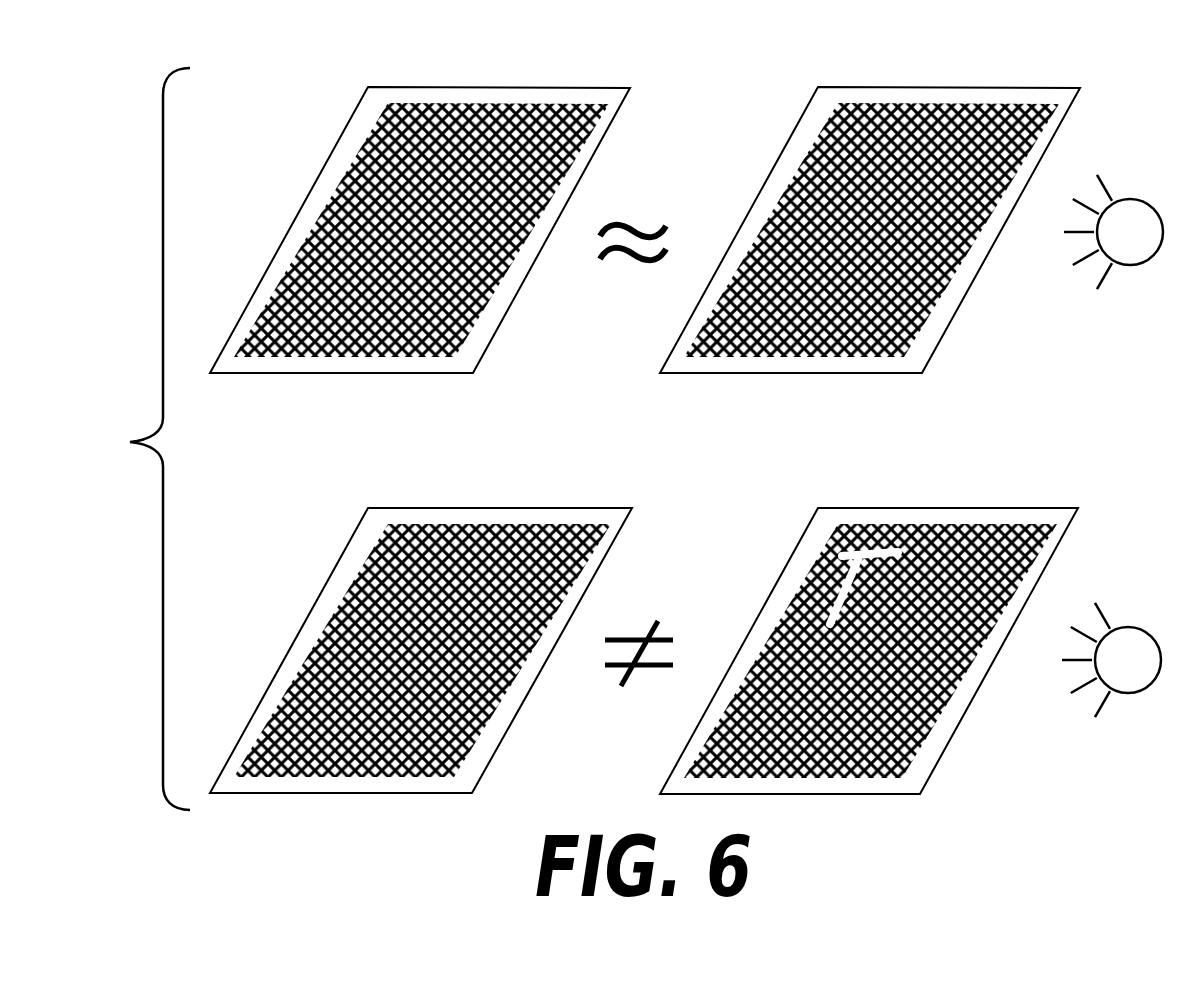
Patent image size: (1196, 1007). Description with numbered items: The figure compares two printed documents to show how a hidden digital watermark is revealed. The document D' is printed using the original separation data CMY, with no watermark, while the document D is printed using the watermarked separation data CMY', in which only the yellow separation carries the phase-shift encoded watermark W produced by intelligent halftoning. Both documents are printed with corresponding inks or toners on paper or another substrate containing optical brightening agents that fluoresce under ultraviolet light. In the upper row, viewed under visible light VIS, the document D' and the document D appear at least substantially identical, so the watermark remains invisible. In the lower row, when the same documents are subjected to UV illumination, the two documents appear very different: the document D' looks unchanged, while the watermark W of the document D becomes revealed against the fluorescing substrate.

The original C,M,Y separation data CMY is at (420, 206).
The watermarked separation data CMY' is at (870, 206).
The document printed with original separation data D' is at (421, 416).
The printed document D is at (870, 417).
The digital watermark W is at (826, 546).
The visible light VIS is at (1113, 232).
The UV illumination UV is at (1111, 660).